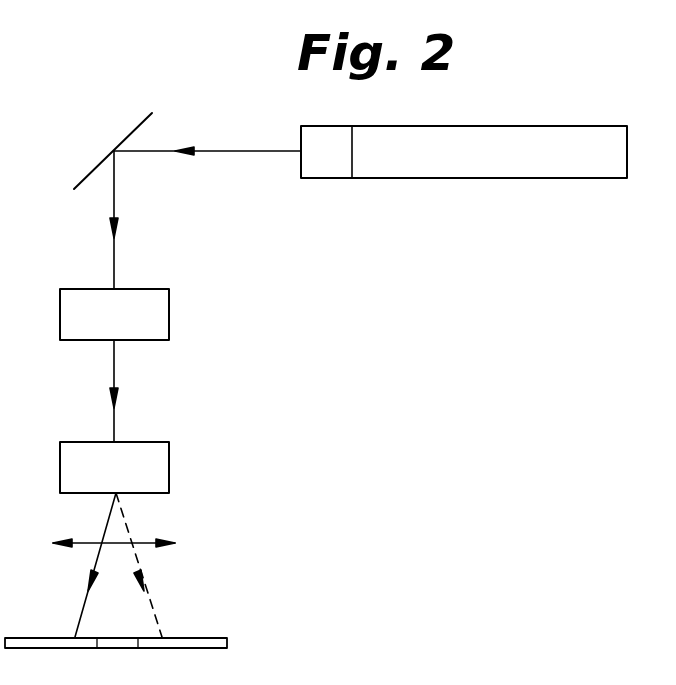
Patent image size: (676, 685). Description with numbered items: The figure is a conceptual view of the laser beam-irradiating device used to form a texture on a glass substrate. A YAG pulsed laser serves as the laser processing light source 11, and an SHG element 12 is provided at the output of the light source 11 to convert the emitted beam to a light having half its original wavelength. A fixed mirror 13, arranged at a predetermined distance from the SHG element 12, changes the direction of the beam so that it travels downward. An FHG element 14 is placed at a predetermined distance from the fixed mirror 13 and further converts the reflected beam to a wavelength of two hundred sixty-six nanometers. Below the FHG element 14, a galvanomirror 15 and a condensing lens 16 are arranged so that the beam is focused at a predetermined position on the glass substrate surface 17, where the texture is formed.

The laser processing light source 11 is at (467, 174).
The SHG element 12 is at (327, 174).
The fixed mirror 13 is at (98, 162).
The FHG element 14 is at (162, 320).
The galvanomirror 15 is at (165, 458).
The condensing lens 16 is at (143, 541).
The glass substrate surface 17 is at (227, 641).